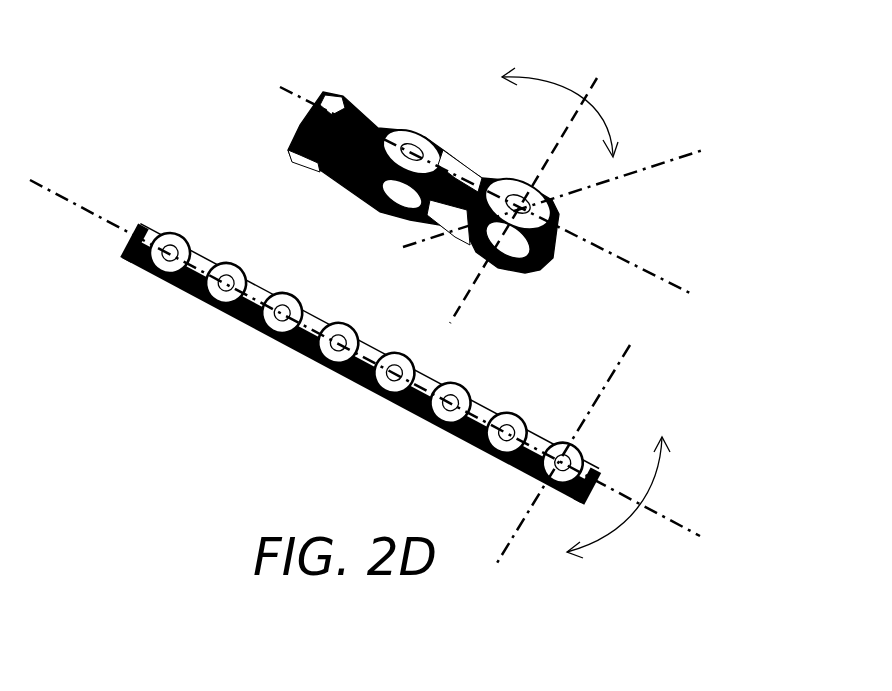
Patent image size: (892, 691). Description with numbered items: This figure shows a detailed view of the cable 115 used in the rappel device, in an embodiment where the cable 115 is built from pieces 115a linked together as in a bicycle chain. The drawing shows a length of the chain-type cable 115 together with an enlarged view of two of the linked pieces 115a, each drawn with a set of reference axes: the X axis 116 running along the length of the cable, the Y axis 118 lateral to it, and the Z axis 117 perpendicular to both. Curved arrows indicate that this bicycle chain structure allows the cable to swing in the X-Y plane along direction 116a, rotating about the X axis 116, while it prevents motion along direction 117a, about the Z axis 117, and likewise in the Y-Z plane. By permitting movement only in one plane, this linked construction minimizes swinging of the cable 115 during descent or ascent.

The cable 115 is at (218, 263).
The pieces 115a is at (418, 131).
The X axis 116 is at (115, 227).
The swing direction 116a is at (662, 467).
The Z axis 117 is at (467, 277).
The prevented motion direction 117a is at (538, 75).
The Y axis 118 is at (675, 157).